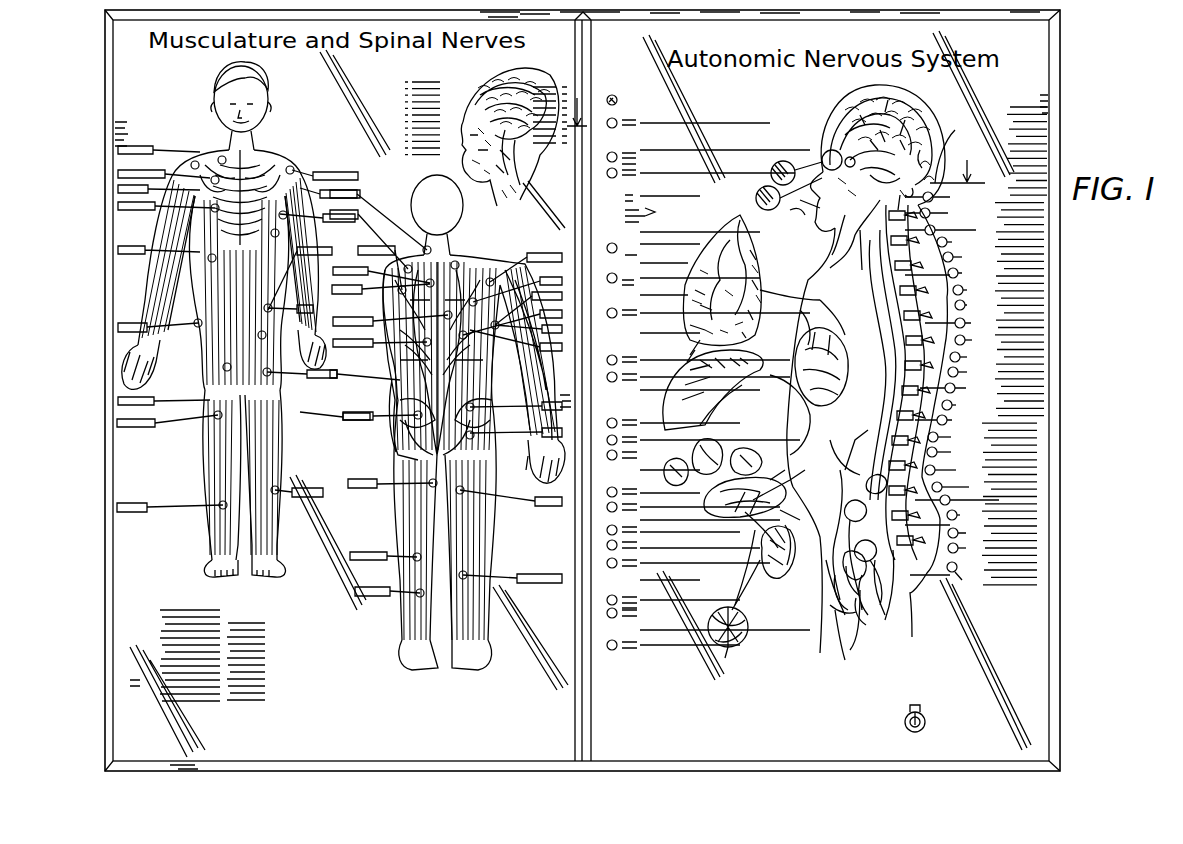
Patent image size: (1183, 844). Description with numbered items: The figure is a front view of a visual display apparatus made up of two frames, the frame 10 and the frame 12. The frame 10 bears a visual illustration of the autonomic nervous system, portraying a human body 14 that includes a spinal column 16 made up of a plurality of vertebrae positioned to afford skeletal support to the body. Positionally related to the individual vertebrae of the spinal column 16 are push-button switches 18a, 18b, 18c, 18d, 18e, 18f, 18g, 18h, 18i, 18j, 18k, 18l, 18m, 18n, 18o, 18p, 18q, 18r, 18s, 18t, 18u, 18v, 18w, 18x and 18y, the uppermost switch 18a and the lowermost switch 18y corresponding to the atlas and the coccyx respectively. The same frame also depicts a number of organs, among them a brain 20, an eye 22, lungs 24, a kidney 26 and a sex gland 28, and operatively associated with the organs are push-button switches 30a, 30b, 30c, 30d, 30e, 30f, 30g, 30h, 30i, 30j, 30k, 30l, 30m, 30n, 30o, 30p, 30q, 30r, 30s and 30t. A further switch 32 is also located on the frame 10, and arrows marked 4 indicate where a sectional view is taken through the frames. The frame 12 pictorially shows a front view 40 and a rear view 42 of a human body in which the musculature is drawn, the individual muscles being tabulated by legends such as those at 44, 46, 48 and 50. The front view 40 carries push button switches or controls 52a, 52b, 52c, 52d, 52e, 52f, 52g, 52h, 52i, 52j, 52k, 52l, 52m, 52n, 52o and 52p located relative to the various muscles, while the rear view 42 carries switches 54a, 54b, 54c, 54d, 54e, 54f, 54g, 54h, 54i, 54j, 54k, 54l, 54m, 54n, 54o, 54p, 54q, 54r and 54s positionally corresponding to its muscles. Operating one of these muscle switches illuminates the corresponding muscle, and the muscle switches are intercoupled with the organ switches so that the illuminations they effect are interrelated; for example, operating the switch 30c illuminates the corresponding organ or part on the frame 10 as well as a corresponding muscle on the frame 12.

The section line 4- 4 is at (776, 137).
The frame 10 is at (1071, 313).
The frame 12 is at (101, 61).
The human body 14 is at (745, 482).
The spinal column 16 is at (880, 262).
The push-button switch 18a is at (956, 145).
The push-button switch 18b is at (944, 197).
The push-button switch 18c is at (943, 216).
The push-button switch 18d is at (958, 234).
The push-button switch 18e is at (961, 246).
The push-button switch 18f is at (968, 261).
The push-button switch 18g is at (950, 277).
The push-button switch 18h is at (976, 295).
The push-button switch 18i is at (974, 310).
The push-button switch 18j is at (962, 327).
The push-button switch 18k is at (980, 344).
The push-button switch 18l is at (972, 362).
The push-button switch 18m is at (977, 378).
The push-button switch 18n is at (959, 394).
The push-button switch 18o is at (965, 411).
The push-button switch 18p is at (950, 425).
The push-button switch 18q is at (956, 445).
The push-button switch 18r is at (954, 459).
The push-button switch 18s is at (956, 477).
The push-button switch 18t is at (966, 494).
The push-button switch 18u is at (974, 504).
The push-button switch 18v is at (970, 519).
The push-button switch 18w is at (954, 537).
The push-button switch 18x is at (974, 555).
The push-button switch 18y is at (951, 581).
The brain 20 is at (848, 108).
The eye 22 is at (835, 158).
The lungs 24 is at (760, 290).
The kidney 26 is at (803, 358).
The sex gland 28 is at (787, 611).
The push-button switch 30a is at (617, 99).
The push-button switch 30b is at (620, 119).
The push-button switch 30c is at (613, 156).
The push-button switch 30d is at (618, 176).
The push-button switch 30e is at (608, 251).
The push-button switch 30f is at (610, 283).
The push-button switch 30g is at (615, 320).
The push-button switch 30h is at (615, 357).
The push-button switch 30i is at (615, 383).
The push-button switch 30j is at (616, 420).
The push-button switch 30k is at (618, 441).
The push-button switch 30l is at (615, 460).
The push-button switch 30m is at (618, 490).
The push-button switch 30n is at (618, 509).
The push-button switch 30o is at (620, 532).
The push-button switch 30p is at (620, 547).
The push-button switch 30q is at (640, 575).
The push-button switch 30r is at (622, 598).
The push-button switch 30s is at (615, 618).
The push-button switch 30t is at (615, 649).
The switch 32 is at (926, 720).
The front view 40 is at (284, 150).
The rear view 42 is at (390, 400).
The legend 44 is at (541, 253).
The legend 46 is at (349, 479).
The legend 48 is at (132, 428).
The legend 50 is at (140, 218).
The push button switch 52a is at (220, 156).
The push button switch 52b is at (213, 176).
The push button switch 52c is at (192, 162).
The push button switch 52d is at (211, 210).
The push button switch 52e is at (208, 262).
The push button switch 52f is at (194, 321).
The push button switch 52g is at (223, 368).
The push button switch 52h is at (215, 418).
The push button switch 52i is at (220, 502).
The push button switch 52j is at (277, 495).
The push button switch 52k is at (270, 376).
The push button switch 52l is at (266, 336).
The push button switch 52m is at (275, 305).
The push button switch 52n is at (279, 233).
The push button switch 52o is at (287, 214).
The push button switch 52p is at (292, 167).
The push button switch 54a is at (418, 597).
The push button switch 54b is at (414, 560).
The push button switch 54c is at (429, 484).
The push button switch 54d is at (414, 417).
The push button switch 54e is at (423, 344).
The push button switch 54f is at (426, 284).
The push button switch 54g is at (400, 287).
The push button switch 54h is at (407, 265).
The push button switch 54i is at (425, 247).
The push button switch 54j is at (456, 261).
The push button switch 54k is at (488, 278).
The push button switch 54l is at (478, 302).
The push button switch 54m is at (444, 316).
The push button switch 54n is at (499, 329).
The push button switch 54o is at (467, 338).
The push button switch 54p is at (475, 408).
The push button switch 54q is at (473, 439).
The push button switch 54r is at (464, 493).
The push button switch 54s is at (467, 573).